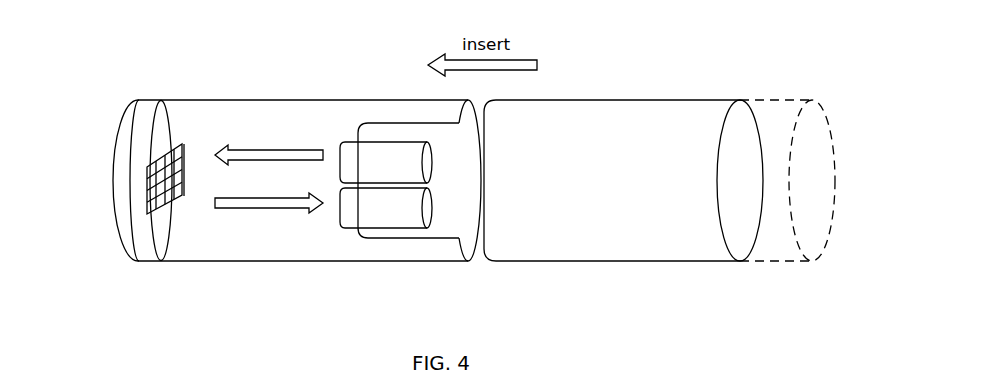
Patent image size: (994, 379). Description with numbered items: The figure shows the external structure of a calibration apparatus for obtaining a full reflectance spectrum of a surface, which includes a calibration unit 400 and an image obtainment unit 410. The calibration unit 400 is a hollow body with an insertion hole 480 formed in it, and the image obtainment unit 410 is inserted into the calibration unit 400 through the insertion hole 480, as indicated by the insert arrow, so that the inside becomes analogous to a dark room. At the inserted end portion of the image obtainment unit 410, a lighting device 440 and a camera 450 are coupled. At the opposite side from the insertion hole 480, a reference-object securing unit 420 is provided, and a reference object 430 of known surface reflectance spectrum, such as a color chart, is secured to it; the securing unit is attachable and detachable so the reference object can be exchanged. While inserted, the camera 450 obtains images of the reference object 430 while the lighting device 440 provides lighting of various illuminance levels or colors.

The calibration unit 400 is at (270, 245).
The image obtainment unit 410 is at (597, 243).
The reference-object securing unit 420 is at (138, 183).
The reference object 430 is at (181, 197).
The lighting device 440 is at (382, 150).
The camera 450 is at (382, 220).
The insertion hole 480 is at (480, 247).